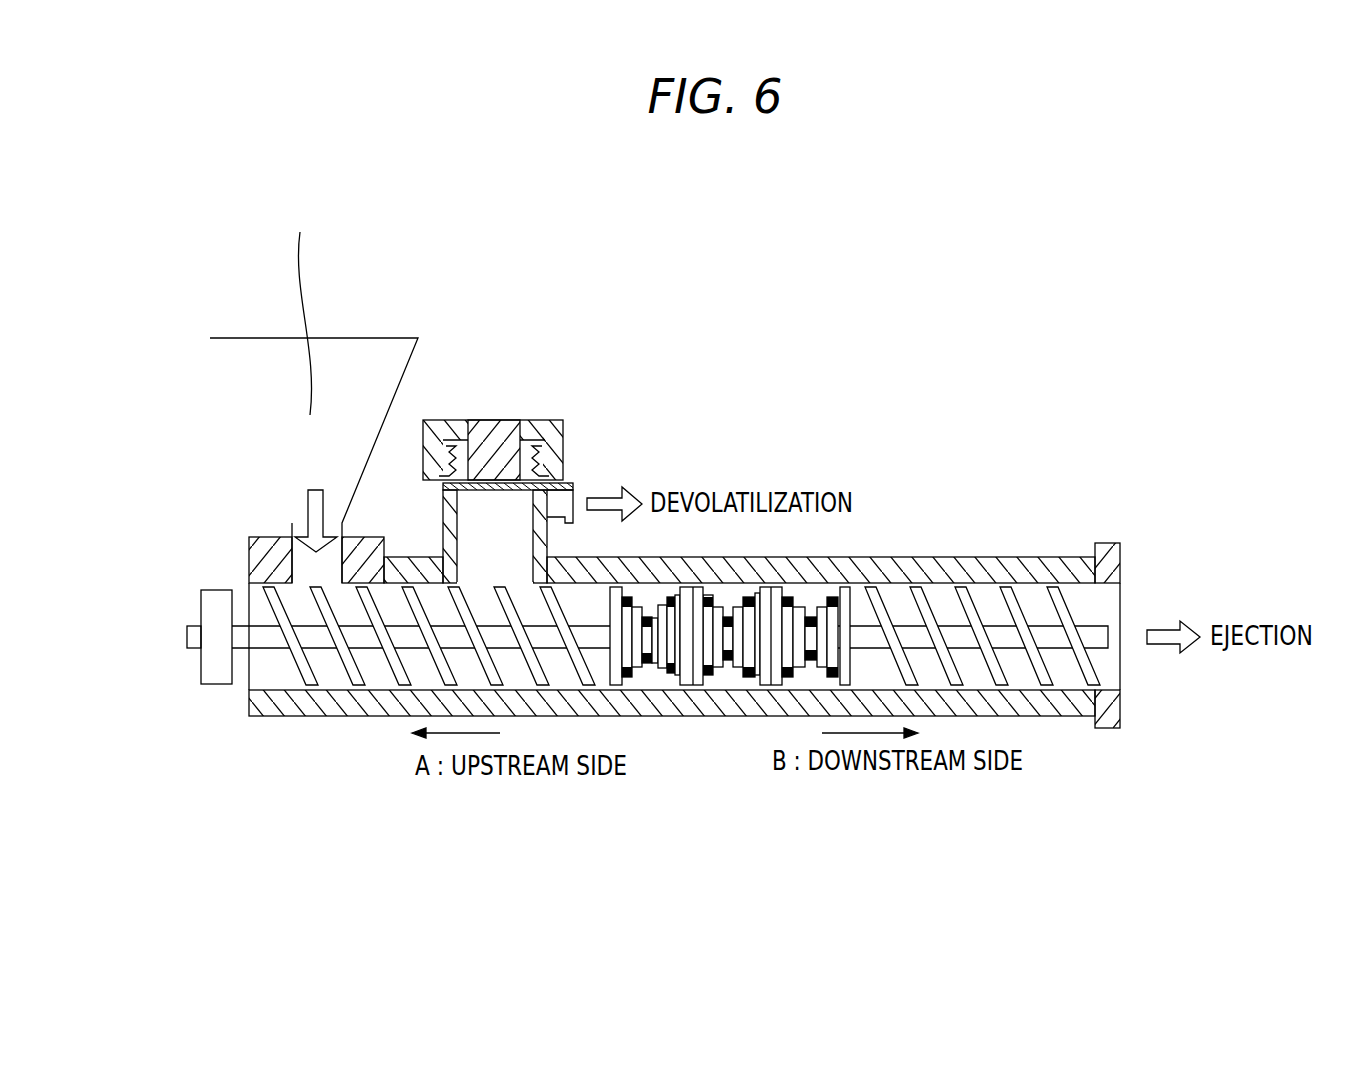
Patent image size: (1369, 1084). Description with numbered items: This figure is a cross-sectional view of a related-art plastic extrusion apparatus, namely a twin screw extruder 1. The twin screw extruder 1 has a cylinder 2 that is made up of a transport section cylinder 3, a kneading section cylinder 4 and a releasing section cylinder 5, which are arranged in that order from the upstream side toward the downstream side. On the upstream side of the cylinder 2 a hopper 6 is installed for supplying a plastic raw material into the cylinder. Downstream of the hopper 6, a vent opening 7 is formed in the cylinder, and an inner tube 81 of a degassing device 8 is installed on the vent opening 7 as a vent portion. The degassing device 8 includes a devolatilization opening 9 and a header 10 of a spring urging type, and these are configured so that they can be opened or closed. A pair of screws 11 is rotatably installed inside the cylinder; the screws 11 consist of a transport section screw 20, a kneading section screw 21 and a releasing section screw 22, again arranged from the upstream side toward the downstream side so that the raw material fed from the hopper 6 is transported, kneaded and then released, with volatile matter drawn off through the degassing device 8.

The twin screw extruder 1 is at (897, 490).
The cylinder 2 is at (287, 717).
The transport section cylinder 3 is at (360, 717).
The kneading section cylinder 4 is at (683, 688).
The releasing section cylinder 5 is at (1037, 717).
The hopper 6 is at (225, 338).
The vent opening 7 is at (520, 570).
The degassing device 8 is at (450, 420).
The devolatilization opening 9 is at (533, 548).
The header 10 is at (503, 425).
The pair of screws 11 is at (405, 635).
The transport section screw 20 is at (343, 662).
The kneading section screw 21 is at (705, 650).
The releasing section screw 22 is at (973, 610).
The inner tube 81 is at (573, 485).